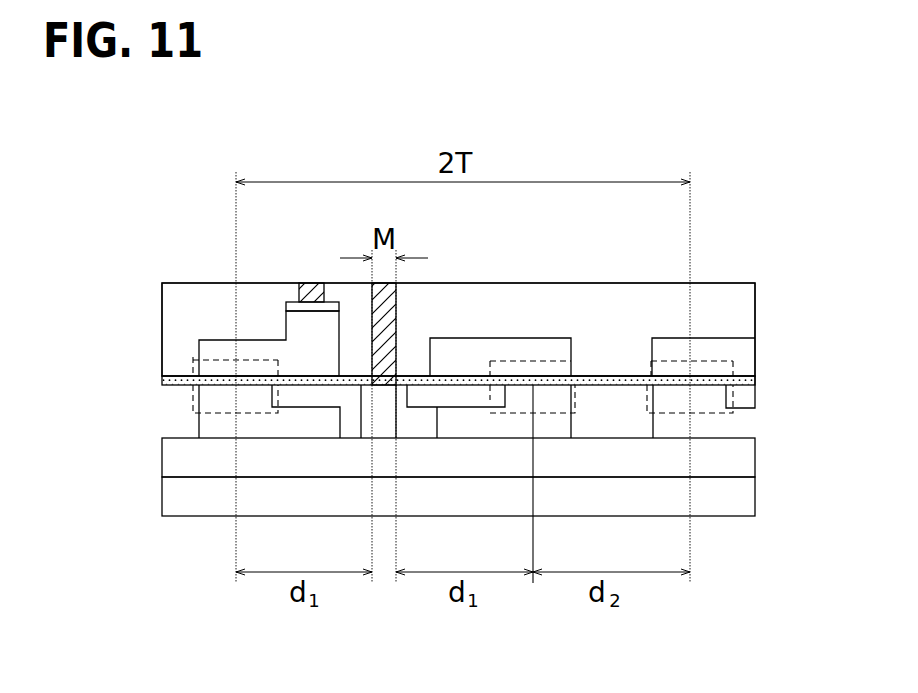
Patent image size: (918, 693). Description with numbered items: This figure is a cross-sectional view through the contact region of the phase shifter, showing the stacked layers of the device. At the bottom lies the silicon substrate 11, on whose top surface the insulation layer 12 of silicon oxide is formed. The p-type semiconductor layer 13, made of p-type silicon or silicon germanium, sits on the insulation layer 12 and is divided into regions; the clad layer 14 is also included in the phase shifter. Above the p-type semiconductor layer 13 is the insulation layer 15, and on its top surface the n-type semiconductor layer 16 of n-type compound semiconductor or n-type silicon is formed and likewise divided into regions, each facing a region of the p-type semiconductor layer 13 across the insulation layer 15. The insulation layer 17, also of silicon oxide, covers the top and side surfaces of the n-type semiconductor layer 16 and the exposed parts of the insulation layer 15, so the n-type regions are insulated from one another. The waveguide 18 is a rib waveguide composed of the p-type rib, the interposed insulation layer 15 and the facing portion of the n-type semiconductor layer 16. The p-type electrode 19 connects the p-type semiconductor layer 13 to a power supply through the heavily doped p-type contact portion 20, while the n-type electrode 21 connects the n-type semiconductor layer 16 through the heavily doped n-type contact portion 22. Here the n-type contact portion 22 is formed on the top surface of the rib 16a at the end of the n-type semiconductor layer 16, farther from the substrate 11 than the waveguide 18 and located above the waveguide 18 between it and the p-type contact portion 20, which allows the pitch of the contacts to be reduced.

The substrate 11 is at (740, 498).
The insulation layer 12 is at (742, 458).
The p-type semiconductor layer 13 is at (480, 422).
The clad layer 14 is at (610, 422).
The insulation layer 15 is at (752, 380).
The n-type semiconductor layer 16 is at (503, 352).
The rib 16a is at (300, 330).
The insulation layer 17 is at (750, 318).
The waveguide 18 is at (560, 322).
The p-type electrode 19 is at (398, 303).
The p-type contact portion 20 is at (386, 420).
The n-type electrode 21 is at (313, 300).
The n-type contact portion 22 is at (292, 302).